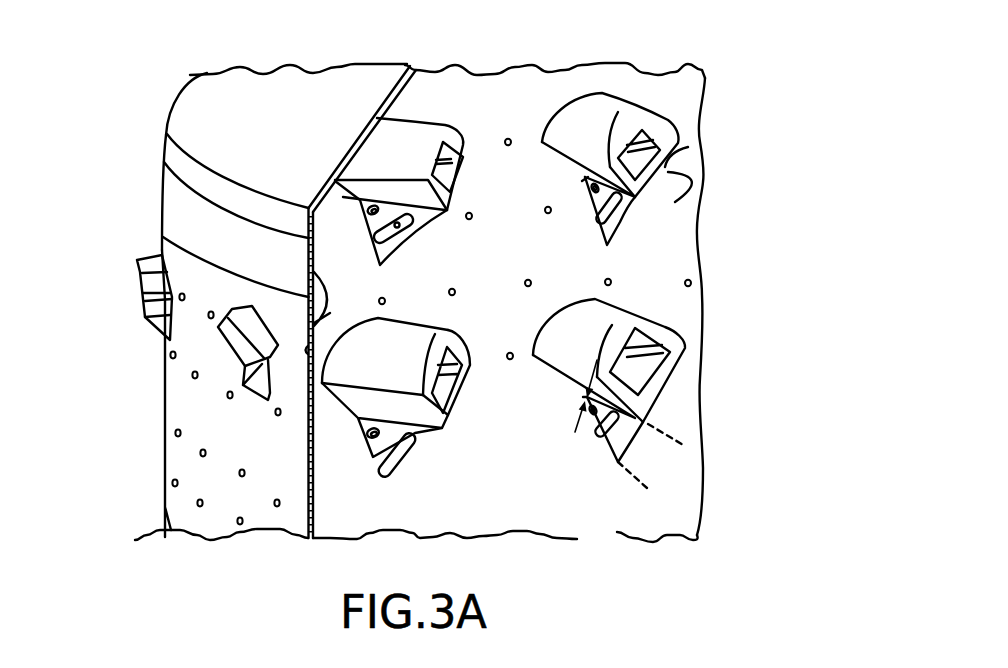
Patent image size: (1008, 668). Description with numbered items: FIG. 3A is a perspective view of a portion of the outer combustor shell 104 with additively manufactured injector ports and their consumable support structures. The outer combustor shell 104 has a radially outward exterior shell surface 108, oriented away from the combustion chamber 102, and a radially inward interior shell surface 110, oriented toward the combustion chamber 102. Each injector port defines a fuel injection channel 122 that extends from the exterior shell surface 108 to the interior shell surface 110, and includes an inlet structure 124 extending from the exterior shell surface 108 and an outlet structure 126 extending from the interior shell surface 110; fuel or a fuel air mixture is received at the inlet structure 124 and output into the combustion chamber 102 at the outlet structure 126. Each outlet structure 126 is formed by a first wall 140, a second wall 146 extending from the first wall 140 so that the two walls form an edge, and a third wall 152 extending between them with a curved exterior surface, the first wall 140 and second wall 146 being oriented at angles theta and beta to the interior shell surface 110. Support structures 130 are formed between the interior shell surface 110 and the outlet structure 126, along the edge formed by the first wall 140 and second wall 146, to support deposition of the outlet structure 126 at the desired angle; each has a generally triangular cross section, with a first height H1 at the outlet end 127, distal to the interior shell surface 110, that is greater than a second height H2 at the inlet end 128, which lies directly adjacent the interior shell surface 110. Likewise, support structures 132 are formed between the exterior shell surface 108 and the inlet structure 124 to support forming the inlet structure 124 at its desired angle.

The combustion chamber 102 is at (445, 279).
The outer combustor shell 104 is at (184, 87).
The exterior shell surface 108 is at (244, 441).
The interior shell surface 110 is at (506, 255).
The fuel injection channel 122 is at (278, 242).
The inlet structure 124 is at (141, 261).
The outlet structure 126 is at (548, 275).
The outlet end 127 is at (681, 441).
The inlet end 128 is at (584, 397).
The support structure 130 is at (418, 437).
The support structure 132 is at (165, 338).
The first wall 140 is at (672, 150).
The second wall 146 is at (572, 158).
The third wall 152 is at (539, 316).
The first height H1 is at (641, 494).
The second height H2 is at (578, 411).